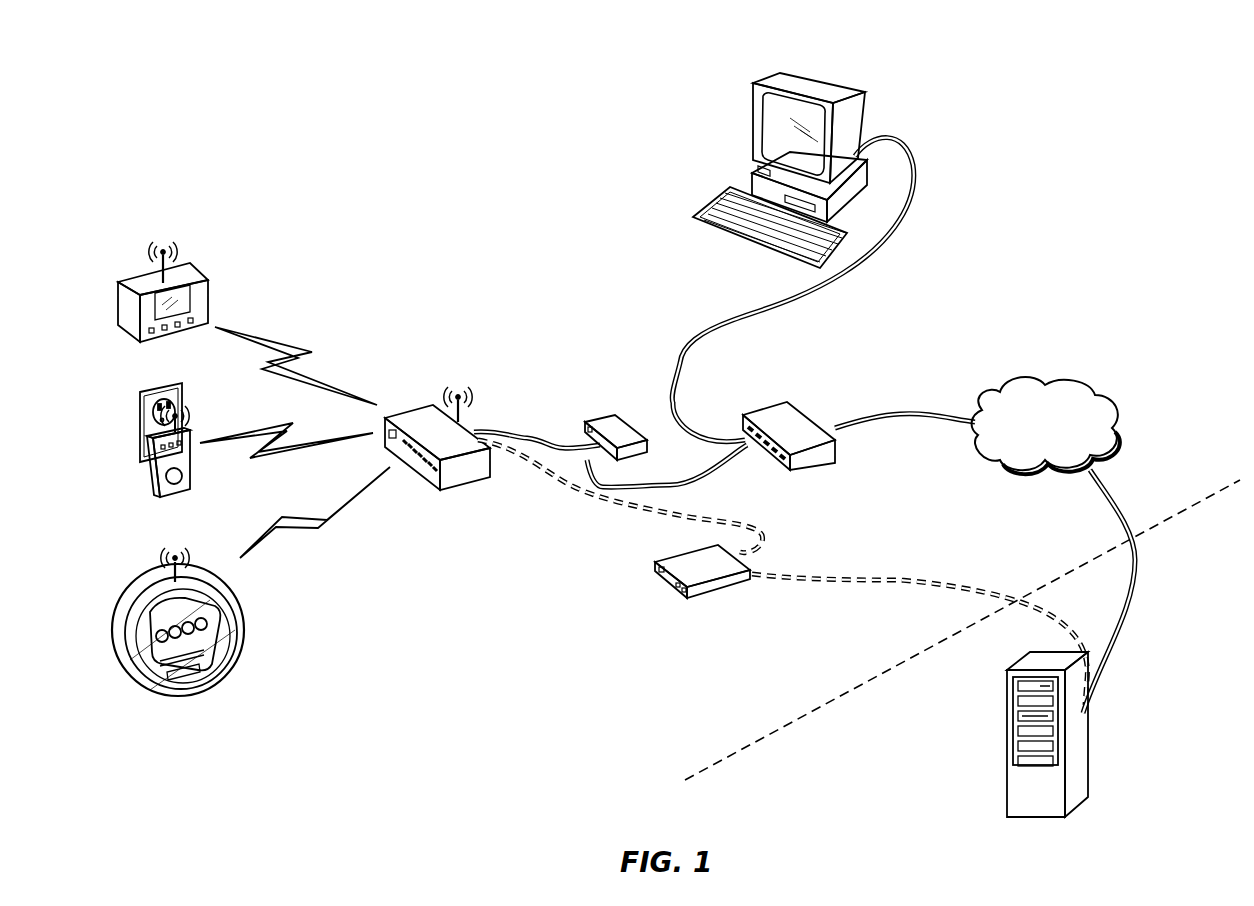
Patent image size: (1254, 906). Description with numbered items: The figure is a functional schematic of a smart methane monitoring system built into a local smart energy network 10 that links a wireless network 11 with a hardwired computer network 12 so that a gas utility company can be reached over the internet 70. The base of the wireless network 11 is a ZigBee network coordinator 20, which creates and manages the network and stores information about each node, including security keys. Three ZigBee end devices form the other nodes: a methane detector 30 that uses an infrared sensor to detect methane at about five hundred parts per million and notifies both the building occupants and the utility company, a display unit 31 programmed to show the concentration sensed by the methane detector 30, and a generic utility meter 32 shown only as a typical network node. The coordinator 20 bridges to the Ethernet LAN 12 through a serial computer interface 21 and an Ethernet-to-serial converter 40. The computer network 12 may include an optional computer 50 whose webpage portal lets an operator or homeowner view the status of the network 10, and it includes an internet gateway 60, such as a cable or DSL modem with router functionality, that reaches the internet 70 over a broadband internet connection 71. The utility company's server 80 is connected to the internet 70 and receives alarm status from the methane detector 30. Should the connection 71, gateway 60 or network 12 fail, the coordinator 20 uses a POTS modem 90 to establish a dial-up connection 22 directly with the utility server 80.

The smart energy network 10 is at (1046, 130).
The wireless network 11 is at (310, 262).
The computer network 12 is at (540, 650).
The ZigBee network coordinator 20 is at (462, 490).
The serial computer interface 21 is at (535, 437).
The dial-up connection 22 is at (585, 498).
The methane detector 30 is at (169, 494).
The display unit 31 is at (146, 281).
The utility meter 32 is at (153, 574).
The Ethernet-to-serial converter 40 is at (602, 415).
The computer 50 is at (752, 178).
The internet gateway 60 is at (768, 412).
The internet 70 is at (1036, 380).
The broadband internet connection 71 is at (890, 412).
The utility server 80 is at (1006, 745).
The POTS modem 90 is at (720, 598).